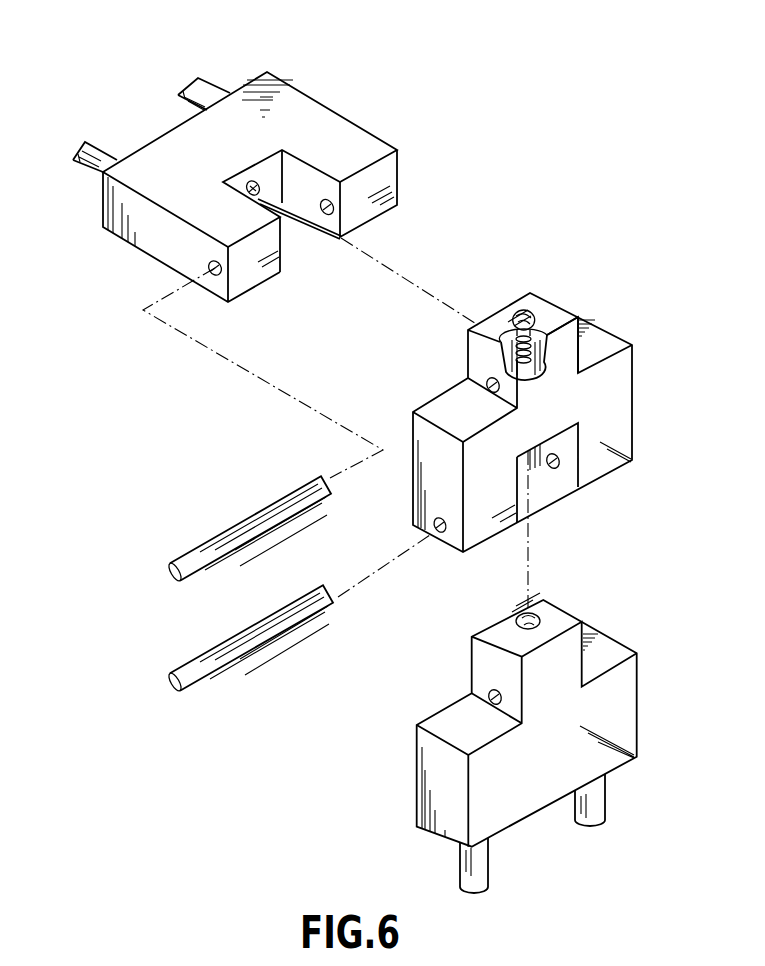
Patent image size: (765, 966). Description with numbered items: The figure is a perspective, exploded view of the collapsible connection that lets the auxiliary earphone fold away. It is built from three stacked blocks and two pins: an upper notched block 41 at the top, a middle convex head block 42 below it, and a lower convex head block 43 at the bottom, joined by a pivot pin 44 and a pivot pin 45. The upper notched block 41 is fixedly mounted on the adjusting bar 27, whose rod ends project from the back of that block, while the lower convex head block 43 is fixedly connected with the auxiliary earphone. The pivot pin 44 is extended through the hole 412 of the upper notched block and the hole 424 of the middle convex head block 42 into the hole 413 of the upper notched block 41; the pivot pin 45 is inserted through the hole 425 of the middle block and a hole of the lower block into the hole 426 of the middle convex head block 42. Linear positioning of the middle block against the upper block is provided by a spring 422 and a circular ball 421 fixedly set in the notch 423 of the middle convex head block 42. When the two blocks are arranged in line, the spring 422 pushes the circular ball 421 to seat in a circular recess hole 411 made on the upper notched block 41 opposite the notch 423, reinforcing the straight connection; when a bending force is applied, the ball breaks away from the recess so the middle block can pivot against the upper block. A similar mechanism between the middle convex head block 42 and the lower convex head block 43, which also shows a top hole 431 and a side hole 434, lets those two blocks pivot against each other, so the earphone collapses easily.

The adjusting bar 27 is at (197, 77).
The upper notched block 41 is at (360, 140).
The circular recess hole 411 is at (256, 184).
The hole 412 is at (214, 272).
The hole 413 is at (327, 215).
The middle convex head block 42 is at (684, 308).
The circular ball 421 is at (524, 311).
The spring 422 is at (575, 318).
The notch 423 is at (510, 343).
The hole 424 is at (485, 386).
The hole 425 is at (438, 533).
The hole 426 is at (553, 469).
The lower convex head block 43 is at (622, 690).
The hole in third block 431 is at (540, 612).
The hole in third block 434 is at (490, 698).
The pivot pin 44 is at (168, 570).
The pivot pin 45 is at (175, 692).